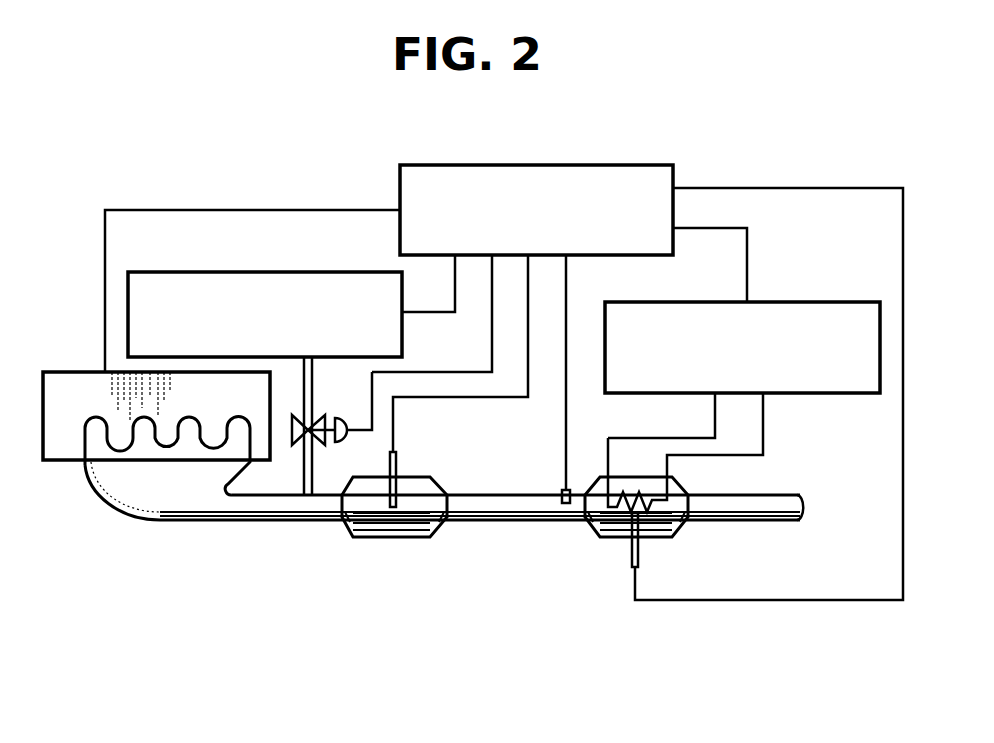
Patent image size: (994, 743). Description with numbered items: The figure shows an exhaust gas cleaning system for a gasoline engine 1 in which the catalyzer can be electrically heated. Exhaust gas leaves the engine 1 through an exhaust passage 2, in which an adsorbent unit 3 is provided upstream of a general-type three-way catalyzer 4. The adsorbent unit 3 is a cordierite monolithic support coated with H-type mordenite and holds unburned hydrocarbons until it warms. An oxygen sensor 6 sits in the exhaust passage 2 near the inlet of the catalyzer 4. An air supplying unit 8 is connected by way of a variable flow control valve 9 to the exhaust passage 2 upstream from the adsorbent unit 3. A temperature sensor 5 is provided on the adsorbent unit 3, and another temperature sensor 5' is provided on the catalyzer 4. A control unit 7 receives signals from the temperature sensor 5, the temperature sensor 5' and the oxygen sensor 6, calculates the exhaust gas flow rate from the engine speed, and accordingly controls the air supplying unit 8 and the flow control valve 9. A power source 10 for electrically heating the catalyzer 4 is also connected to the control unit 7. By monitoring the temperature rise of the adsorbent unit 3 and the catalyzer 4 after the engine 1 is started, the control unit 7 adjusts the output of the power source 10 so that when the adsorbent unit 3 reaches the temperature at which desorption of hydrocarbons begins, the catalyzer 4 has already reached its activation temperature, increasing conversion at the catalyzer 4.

The gasoline engine 1 is at (68, 443).
The exhaust passage 2 is at (238, 516).
The adsorbent unit 3 is at (405, 531).
The three-way catalyzer 4 is at (608, 538).
The temperature sensor 5 is at (459, 381).
The temperature sensor 5' is at (767, 394).
The oxygen sensor 6 is at (561, 490).
The control unit 7 is at (568, 165).
The air supplying unit 8 is at (265, 272).
The variable flow control valve 9 is at (290, 440).
The power source 10 is at (782, 302).